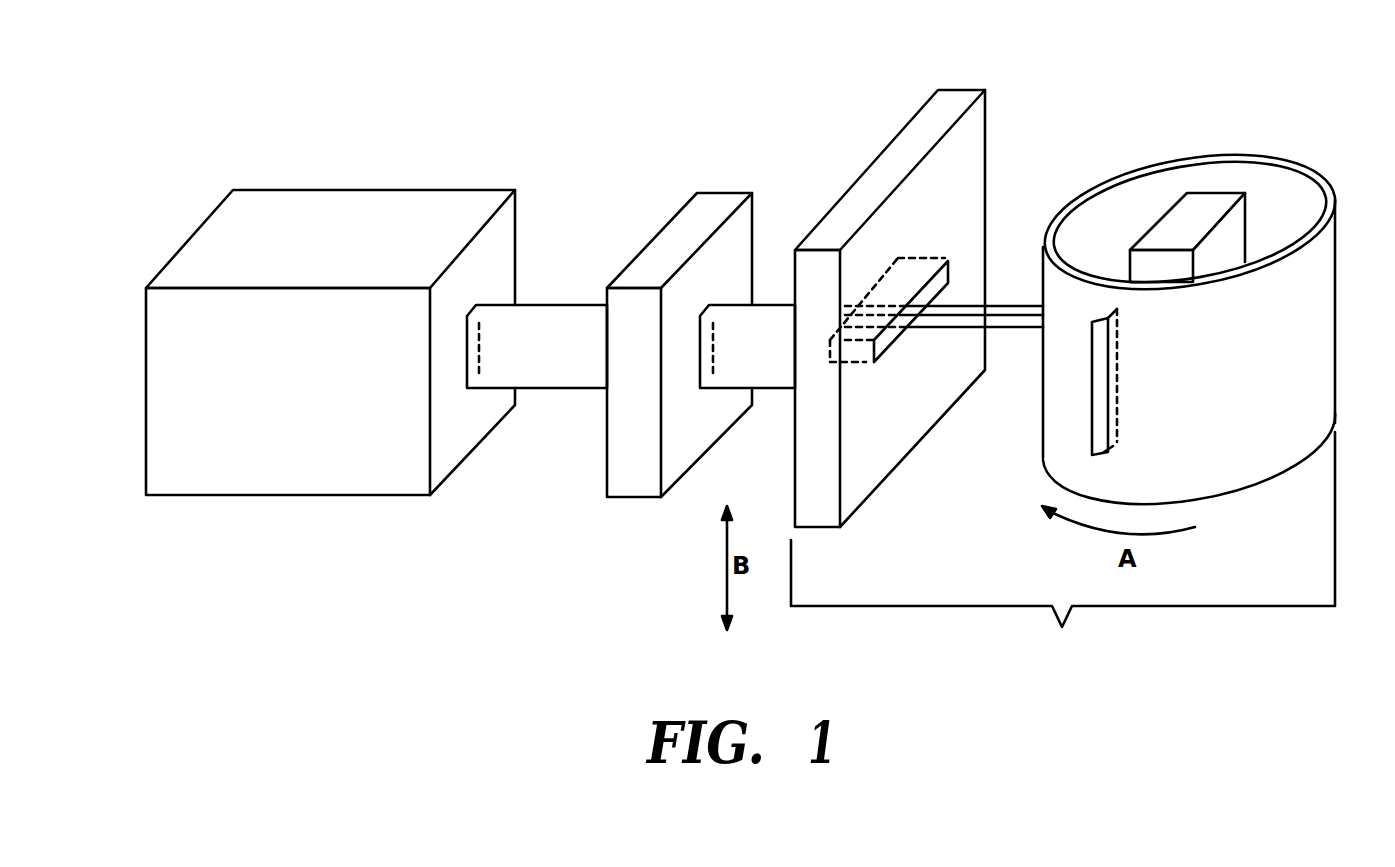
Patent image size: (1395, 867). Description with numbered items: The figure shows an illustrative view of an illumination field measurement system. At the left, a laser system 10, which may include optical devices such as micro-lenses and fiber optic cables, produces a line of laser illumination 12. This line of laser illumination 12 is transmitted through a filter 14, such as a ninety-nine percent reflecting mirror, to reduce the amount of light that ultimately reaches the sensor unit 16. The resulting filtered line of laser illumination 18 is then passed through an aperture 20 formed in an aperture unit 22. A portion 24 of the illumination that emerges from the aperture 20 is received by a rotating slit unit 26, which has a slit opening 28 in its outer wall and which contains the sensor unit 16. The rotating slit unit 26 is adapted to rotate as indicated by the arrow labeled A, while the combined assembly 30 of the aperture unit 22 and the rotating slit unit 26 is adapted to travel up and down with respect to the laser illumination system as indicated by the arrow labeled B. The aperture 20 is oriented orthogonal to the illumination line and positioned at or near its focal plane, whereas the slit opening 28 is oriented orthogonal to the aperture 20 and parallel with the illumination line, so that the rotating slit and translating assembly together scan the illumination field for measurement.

The laser system 10 is at (458, 203).
The line of laser illumination 12 is at (560, 305).
The filter 14 is at (717, 198).
The sensor unit 16 is at (1200, 205).
The filtered line of laser illumination 18 is at (764, 305).
The aperture 20 is at (890, 345).
The aperture unit 22 is at (952, 100).
The portion of the illumination 24 is at (1005, 306).
The rotating slit unit 26 is at (1310, 175).
The slit opening 28 is at (1102, 365).
The combined assembly 30 is at (1063, 552).